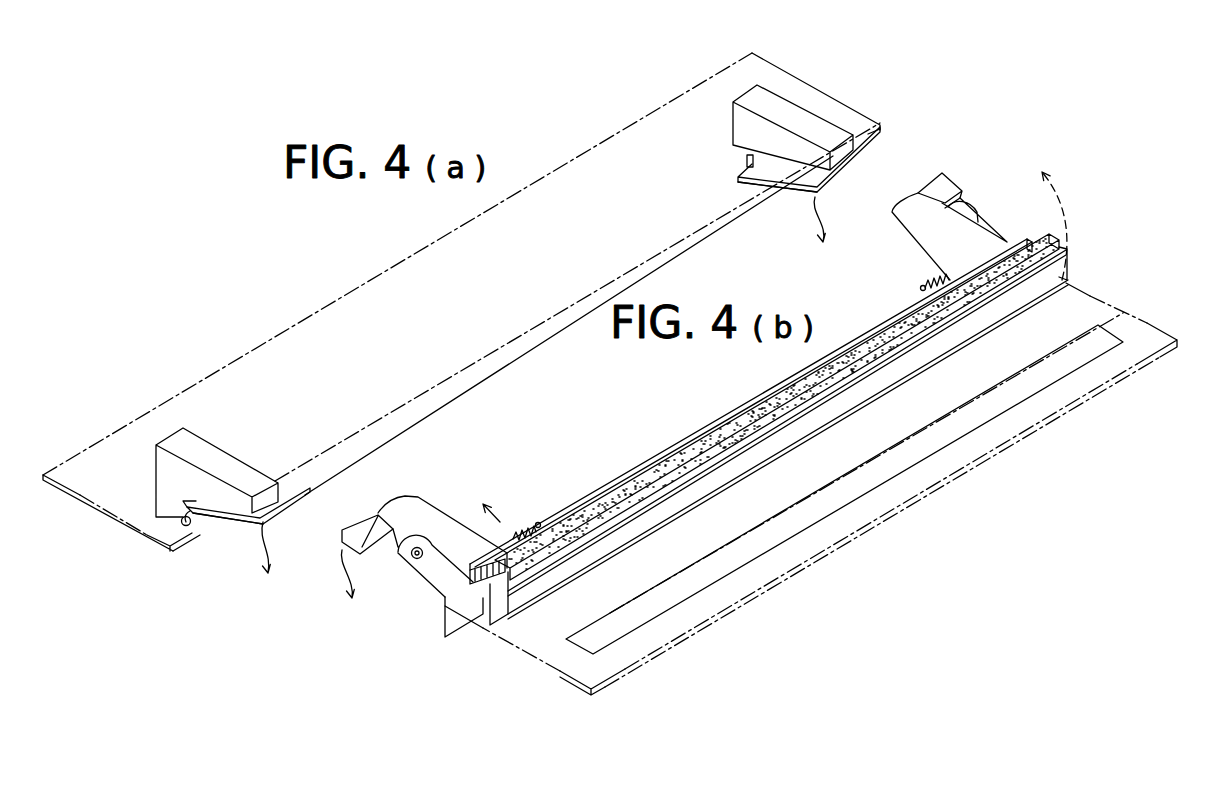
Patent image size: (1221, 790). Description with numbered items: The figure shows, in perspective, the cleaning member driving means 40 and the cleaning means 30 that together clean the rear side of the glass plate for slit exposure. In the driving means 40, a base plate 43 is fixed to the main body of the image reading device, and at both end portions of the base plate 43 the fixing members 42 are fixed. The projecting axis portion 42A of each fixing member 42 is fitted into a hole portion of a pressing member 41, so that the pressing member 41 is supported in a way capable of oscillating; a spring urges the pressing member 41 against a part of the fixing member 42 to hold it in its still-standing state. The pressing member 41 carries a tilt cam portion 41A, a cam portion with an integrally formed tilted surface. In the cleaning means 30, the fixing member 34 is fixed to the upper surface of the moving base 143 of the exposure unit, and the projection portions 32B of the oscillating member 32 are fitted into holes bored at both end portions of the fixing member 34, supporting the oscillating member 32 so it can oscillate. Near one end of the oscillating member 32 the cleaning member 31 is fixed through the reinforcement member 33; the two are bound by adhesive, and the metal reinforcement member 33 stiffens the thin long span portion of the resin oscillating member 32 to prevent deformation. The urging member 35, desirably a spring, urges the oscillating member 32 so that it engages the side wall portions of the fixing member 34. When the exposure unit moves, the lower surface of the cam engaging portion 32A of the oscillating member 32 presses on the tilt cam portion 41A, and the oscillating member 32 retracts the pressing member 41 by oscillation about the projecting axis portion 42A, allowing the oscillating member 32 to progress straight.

In FIG. 4b, the cleaning means 30 is at (635, 443).
In FIG. 4b, the cleaning member 31 is at (619, 511).
In FIG. 4b, the oscillating member 32 is at (390, 487).
In FIG. 4b, the cam engaging portion 32A is at (368, 552).
In FIG. 4b, the projection portion 32B is at (417, 560).
In FIG. 4b, the reinforcement member 33 is at (475, 565).
In FIG. 4b, the fixing member 34 is at (437, 597).
In FIG. 4b, the urging member 35 is at (513, 537).
In FIG. 4b, the moving base 143 is at (528, 660).
In FIG. 4a, the cleaning member driving means 40 is at (366, 264).
In FIG. 4a, the pressing member 41 is at (283, 510).
In FIG. 4a, the tilt cam portion 41A is at (237, 521).
In FIG. 4a, the fixing member 42 is at (227, 452).
In FIG. 4a, the projecting axis portion 42A is at (175, 530).
In FIG. 4a, the base plate 43 is at (308, 303).